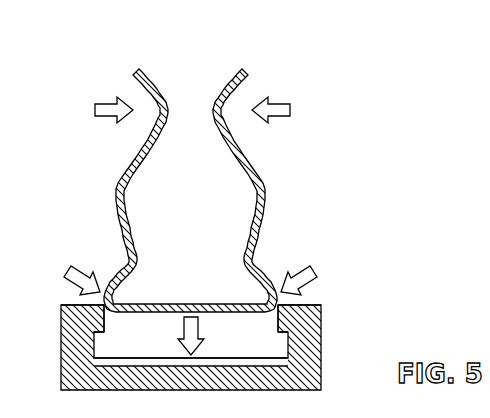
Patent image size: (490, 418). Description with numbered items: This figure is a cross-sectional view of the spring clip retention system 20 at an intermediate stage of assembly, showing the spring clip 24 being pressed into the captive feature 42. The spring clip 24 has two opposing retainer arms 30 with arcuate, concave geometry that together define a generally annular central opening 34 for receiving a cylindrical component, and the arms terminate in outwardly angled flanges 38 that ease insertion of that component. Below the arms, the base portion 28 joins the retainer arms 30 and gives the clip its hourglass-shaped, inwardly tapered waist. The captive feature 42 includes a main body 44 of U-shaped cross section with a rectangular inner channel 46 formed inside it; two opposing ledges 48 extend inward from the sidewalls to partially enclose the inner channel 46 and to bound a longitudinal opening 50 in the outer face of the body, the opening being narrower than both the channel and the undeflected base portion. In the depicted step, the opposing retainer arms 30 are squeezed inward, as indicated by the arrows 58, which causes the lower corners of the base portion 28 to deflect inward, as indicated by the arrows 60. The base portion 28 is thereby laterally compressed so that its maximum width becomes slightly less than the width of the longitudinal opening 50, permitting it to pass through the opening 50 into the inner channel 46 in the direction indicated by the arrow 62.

The spring clip retention system 20 is at (245, 209).
The spring clip 24 is at (245, 209).
The base portion 28 is at (175, 306).
The opposing retainer arms 30 is at (114, 193).
The central opening 34 is at (205, 200).
The flanges 38 is at (142, 70).
The captive feature 42 is at (309, 311).
The main body 44 is at (245, 209).
The inner channel 46 is at (170, 355).
The ledges 48 is at (97, 314).
The longitudinal opening 50 is at (137, 338).
The arrows 58 is at (99, 104).
The arrows 60 is at (74, 270).
The arrow 62 is at (190, 322).